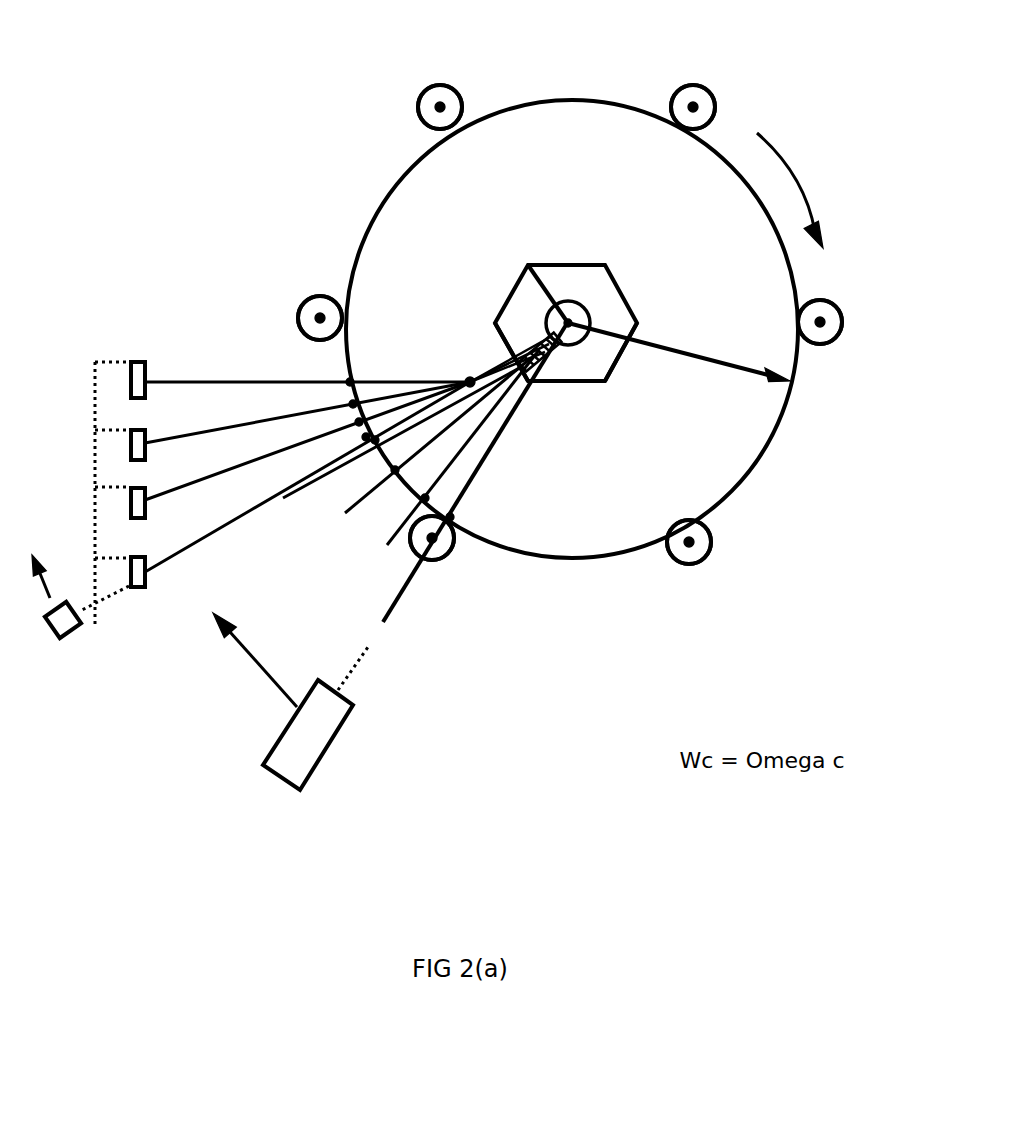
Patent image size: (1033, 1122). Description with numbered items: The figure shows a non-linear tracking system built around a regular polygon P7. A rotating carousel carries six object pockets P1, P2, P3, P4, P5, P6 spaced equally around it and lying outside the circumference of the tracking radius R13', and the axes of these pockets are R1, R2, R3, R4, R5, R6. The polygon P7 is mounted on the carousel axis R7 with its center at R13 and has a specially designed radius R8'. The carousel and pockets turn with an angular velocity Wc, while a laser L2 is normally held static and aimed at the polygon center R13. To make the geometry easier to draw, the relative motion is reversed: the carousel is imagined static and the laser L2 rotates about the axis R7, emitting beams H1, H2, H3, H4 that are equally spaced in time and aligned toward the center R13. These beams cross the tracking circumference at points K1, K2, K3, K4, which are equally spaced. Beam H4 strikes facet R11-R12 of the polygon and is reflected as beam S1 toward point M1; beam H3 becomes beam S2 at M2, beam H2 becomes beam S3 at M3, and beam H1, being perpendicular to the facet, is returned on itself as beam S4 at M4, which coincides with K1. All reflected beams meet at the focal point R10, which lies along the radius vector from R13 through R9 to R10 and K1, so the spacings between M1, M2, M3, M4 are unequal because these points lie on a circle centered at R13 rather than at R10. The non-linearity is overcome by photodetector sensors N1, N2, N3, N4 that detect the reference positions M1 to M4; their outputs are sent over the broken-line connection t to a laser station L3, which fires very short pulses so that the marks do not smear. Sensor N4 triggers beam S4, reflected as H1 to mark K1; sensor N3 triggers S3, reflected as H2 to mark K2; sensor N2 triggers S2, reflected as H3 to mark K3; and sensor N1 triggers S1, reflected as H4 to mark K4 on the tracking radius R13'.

The object pocket P1 is at (460, 553).
The object pocket P2 is at (293, 332).
The object pocket P3 is at (422, 100).
The object pocket P4 is at (722, 122).
The object pocket P5 is at (826, 300).
The object pocket P6 is at (715, 525).
The regular polygon P7 is at (640, 313).
The pocket axis R1 is at (438, 548).
The pocket axis R2 is at (320, 310).
The pocket axis R3 is at (447, 100).
The pocket axis R4 is at (690, 95).
The pocket axis R5 is at (825, 333).
The pocket axis R6 is at (686, 552).
The carousel axis R7 is at (613, 360).
The polygon radius R8' is at (545, 258).
The point on radius vector R9 is at (505, 345).
The focal point R10 is at (467, 380).
The facet end point R11 is at (490, 315).
The facet end point R12 is at (540, 390).
The polygon center R13 is at (595, 283).
The tracking radius R13' is at (679, 366).
The reflected beam S1 is at (307, 365).
The reflected beam S2 is at (307, 412).
The reflected beam S3 is at (307, 441).
The reflected beam S4 is at (307, 477).
The intersection point M1 is at (330, 373).
The intersection point M2 is at (332, 398).
The intersection point M3 is at (335, 422).
The intersection point M4 is at (342, 443).
The laser beam H1 is at (403, 446).
The laser beam H2 is at (425, 451).
The laser beam H3 is at (448, 463).
The laser beam H4 is at (452, 507).
The intersection point K1 is at (390, 446).
The intersection point K2 is at (409, 477).
The intersection point K3 is at (436, 502).
The intersection point K4 is at (464, 519).
The photodetector sensor N1 is at (153, 388).
The photodetector sensor N2 is at (154, 453).
The photodetector sensor N3 is at (155, 511).
The photodetector sensor N4 is at (155, 580).
The connection t is at (93, 373).
The laser L2 is at (295, 757).
The laser station L3 is at (62, 622).
The angular velocity omega c Wc is at (794, 190).